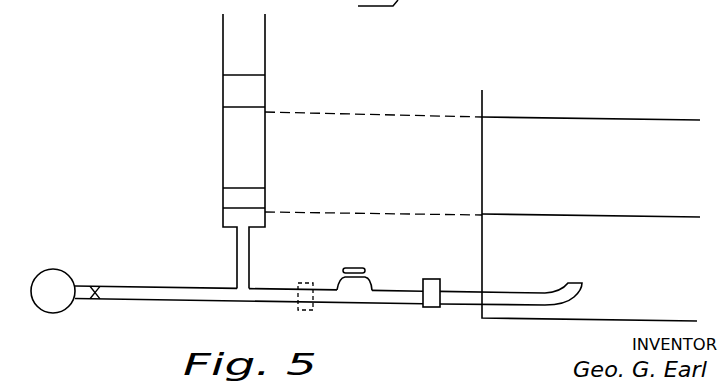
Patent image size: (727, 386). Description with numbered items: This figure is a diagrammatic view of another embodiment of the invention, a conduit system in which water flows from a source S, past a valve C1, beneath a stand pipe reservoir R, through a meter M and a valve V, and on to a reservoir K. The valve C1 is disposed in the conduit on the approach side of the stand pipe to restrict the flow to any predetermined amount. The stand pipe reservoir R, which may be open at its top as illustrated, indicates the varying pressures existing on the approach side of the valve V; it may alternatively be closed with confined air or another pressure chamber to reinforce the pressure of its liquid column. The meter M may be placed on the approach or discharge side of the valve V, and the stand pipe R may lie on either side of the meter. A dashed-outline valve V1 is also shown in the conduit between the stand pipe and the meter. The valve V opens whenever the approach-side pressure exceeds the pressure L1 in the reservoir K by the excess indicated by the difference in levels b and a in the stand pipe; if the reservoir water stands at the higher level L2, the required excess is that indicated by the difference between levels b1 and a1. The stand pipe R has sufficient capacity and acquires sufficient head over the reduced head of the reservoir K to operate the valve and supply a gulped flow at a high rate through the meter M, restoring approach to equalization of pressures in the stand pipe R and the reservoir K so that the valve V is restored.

The stand pipe reservoir R is at (265, 38).
The level b' b1 is at (252, 76).
The level a' a1 is at (352, 108).
The level b is at (249, 187).
The level a is at (352, 207).
The reservoir K is at (589, 199).
The level L2 is at (591, 111).
The level L1 is at (591, 208).
The pressure source S is at (50, 298).
The valve C1 is at (96, 284).
The auxiliary valve V1 is at (307, 307).
The meter M is at (354, 271).
The valve V is at (431, 285).